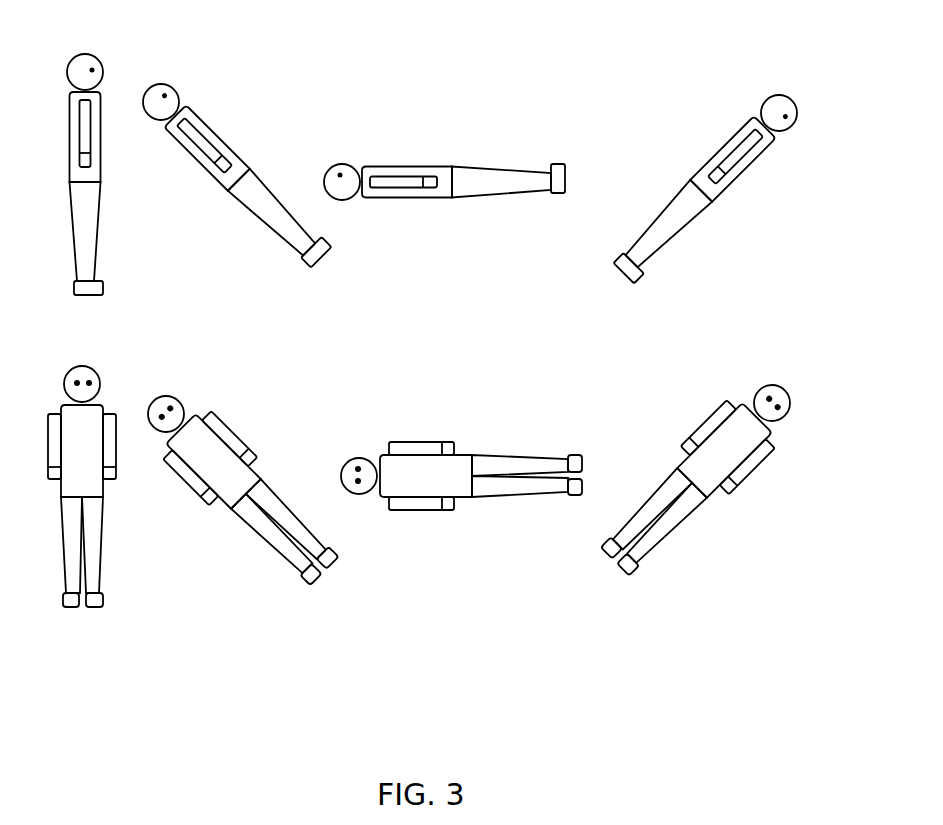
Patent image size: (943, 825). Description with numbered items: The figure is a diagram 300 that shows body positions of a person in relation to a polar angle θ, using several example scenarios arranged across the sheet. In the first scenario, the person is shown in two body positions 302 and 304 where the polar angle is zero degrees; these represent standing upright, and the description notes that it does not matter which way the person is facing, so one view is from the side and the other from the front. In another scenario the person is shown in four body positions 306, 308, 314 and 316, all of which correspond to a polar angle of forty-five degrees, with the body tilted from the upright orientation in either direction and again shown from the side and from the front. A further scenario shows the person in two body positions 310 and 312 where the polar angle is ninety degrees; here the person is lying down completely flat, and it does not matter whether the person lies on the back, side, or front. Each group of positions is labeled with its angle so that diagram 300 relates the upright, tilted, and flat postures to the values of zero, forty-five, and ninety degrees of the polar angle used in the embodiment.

The diagram 300 is at (442, 355).
The body position 302 is at (84, 55).
The body position 304 is at (97, 368).
The body position 306 is at (168, 82).
The body position 308 is at (179, 393).
The body position 310 is at (346, 163).
The body position 312 is at (352, 452).
The body position 314 is at (774, 93).
The body position 316 is at (767, 382).